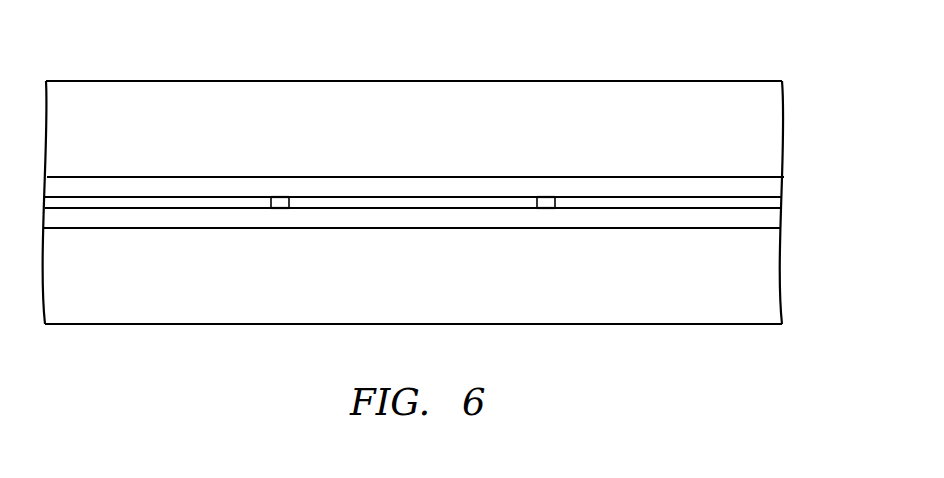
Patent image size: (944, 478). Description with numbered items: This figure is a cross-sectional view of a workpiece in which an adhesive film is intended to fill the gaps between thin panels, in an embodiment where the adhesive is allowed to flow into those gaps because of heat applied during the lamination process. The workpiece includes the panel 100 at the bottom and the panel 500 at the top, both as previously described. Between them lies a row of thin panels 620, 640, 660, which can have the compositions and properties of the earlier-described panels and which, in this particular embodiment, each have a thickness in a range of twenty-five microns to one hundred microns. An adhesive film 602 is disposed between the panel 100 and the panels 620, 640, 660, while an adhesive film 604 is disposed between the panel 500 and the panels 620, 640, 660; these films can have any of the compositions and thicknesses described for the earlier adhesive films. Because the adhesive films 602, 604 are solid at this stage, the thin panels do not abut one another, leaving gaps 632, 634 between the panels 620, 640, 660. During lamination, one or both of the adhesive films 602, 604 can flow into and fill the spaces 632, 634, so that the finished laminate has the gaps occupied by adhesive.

The panel 100 is at (685, 313).
The panel 500 is at (685, 115).
The adhesive film 602 is at (102, 215).
The adhesive film 604 is at (77, 188).
The panel 620 is at (165, 202).
The gap 632 is at (280, 202).
The gap 634 is at (548, 202).
The panel 640 is at (400, 202).
The panel 660 is at (670, 203).